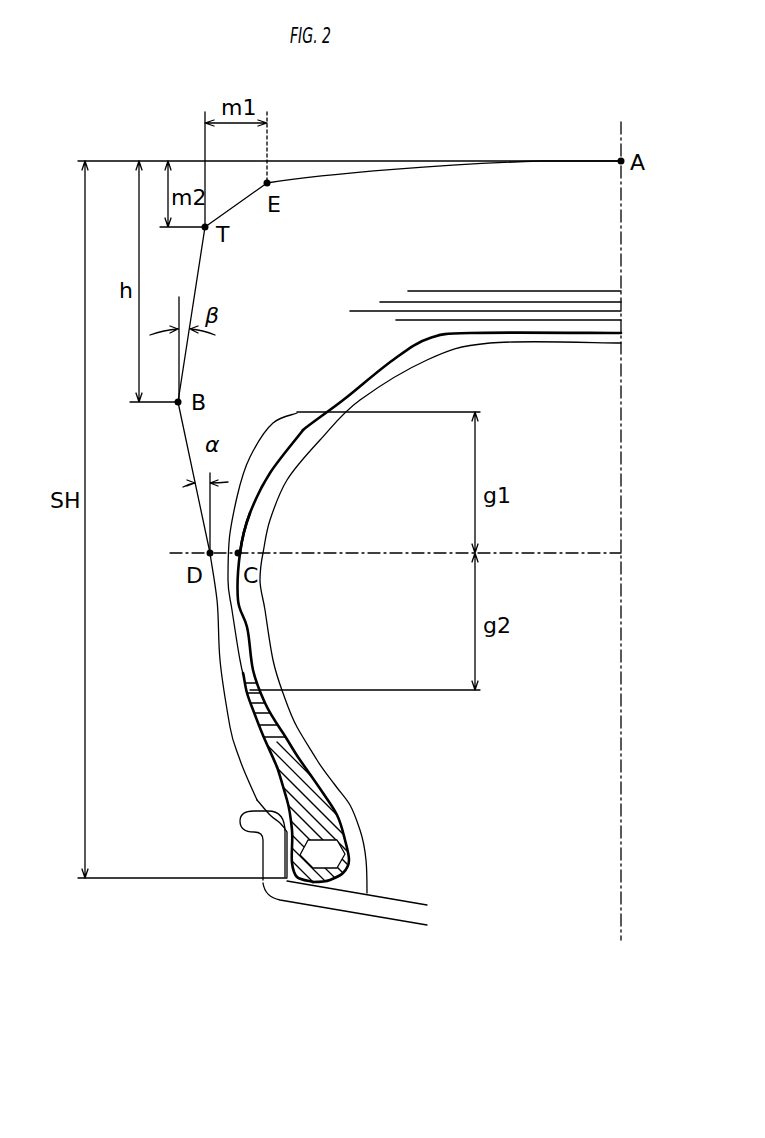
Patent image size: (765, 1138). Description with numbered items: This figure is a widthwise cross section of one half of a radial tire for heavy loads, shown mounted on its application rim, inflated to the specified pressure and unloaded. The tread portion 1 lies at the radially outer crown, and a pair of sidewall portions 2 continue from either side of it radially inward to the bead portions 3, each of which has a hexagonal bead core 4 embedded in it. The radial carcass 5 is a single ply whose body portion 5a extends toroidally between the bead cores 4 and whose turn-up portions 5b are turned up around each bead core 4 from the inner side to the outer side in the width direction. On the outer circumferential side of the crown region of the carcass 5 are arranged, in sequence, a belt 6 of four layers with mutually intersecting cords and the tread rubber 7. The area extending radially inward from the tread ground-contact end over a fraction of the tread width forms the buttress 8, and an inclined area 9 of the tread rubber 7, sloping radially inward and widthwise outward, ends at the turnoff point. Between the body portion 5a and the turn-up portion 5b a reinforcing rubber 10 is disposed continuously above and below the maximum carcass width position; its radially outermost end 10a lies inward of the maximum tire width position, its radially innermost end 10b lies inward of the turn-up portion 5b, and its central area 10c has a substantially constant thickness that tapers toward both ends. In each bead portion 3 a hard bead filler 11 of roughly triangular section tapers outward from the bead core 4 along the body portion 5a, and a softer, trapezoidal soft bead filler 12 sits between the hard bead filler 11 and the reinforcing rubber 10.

The tread portion 1 is at (481, 141).
The sidewall portions 2 is at (176, 456).
The bead portions 3 is at (375, 828).
The bead core 4 is at (320, 858).
The radial carcass 5 is at (323, 756).
The body portion 5a is at (253, 653).
The turn-up portion 5b is at (250, 710).
The belt 6 is at (598, 307).
The tread rubber 7 is at (540, 190).
The buttress 8 is at (222, 270).
The inclined area 9 is at (247, 206).
The reinforcing rubber 10 is at (262, 473).
The radially outermost end 10a is at (297, 415).
The radially innermost end 10b is at (283, 692).
The central area 10c is at (240, 528).
The hard bead filler 11 is at (335, 795).
The soft bead filler 12 is at (258, 740).